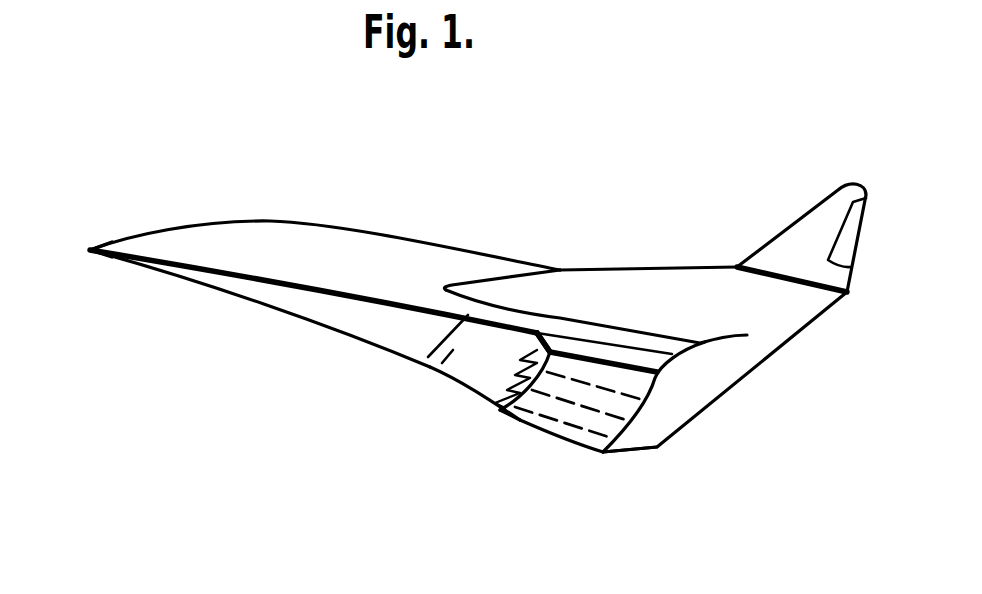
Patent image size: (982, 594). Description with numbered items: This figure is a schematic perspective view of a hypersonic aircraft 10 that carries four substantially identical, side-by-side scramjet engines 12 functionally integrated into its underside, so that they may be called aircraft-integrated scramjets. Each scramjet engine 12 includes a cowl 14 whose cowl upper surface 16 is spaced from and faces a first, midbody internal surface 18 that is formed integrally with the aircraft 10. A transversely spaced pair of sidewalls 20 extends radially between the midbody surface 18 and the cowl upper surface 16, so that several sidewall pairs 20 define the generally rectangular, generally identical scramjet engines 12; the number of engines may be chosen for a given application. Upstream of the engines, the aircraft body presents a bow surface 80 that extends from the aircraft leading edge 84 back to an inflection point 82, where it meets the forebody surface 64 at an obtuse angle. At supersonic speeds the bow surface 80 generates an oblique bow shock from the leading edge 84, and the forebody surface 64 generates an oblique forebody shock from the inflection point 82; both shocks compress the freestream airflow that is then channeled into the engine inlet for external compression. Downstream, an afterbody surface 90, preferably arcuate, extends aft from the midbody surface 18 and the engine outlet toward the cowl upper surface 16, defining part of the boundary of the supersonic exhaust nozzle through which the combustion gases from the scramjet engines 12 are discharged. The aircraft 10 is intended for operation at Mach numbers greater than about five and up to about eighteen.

The hypersonic aircraft 10 is at (416, 222).
The scramjet engine 12 is at (564, 430).
The cowl 14 is at (585, 437).
The cowl upper surface 16 is at (496, 383).
The midbody internal surface 18 is at (524, 366).
The sidewalls 20 is at (488, 358).
The forebody surface 64 is at (431, 366).
The bow surface 80 is at (310, 306).
The inflection point 82 is at (450, 337).
The aircraft leading edge 84 is at (90, 250).
The afterbody surface 90 is at (677, 370).